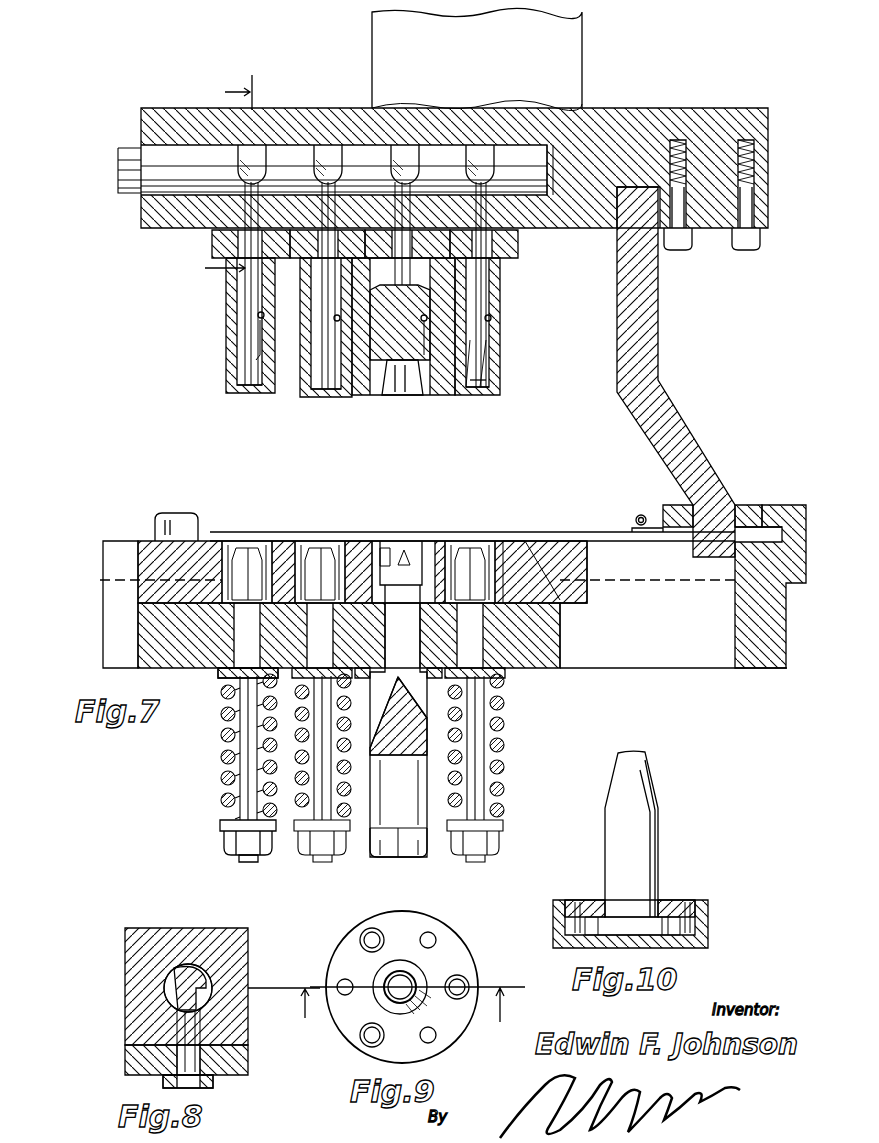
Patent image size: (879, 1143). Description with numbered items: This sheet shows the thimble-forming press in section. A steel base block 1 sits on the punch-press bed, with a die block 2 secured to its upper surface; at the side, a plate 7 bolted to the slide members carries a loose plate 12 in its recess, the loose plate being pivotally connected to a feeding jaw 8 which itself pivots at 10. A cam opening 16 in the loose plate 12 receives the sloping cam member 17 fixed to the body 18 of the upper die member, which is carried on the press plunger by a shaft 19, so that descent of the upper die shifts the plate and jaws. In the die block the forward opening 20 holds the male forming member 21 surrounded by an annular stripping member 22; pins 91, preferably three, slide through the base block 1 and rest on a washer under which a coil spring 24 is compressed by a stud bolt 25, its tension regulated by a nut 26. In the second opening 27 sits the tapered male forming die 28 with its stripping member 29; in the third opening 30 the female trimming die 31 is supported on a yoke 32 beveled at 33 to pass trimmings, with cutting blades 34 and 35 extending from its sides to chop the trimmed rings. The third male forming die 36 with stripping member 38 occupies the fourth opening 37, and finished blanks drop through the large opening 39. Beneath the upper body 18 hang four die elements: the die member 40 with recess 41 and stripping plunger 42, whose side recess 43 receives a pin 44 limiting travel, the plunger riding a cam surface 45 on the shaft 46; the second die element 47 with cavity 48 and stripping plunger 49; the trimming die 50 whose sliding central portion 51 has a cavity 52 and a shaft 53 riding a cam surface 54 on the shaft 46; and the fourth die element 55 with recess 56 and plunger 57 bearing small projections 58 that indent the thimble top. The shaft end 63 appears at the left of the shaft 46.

In FIG. 7, the base block 1 is at (138, 633).
In FIG. 7, the die block 2 is at (138, 558).
In FIG. 7, the plate 7 is at (780, 504).
In FIG. 7, the feeding jaw 8 is at (364, 532).
In FIG. 8, the pivot 10 is at (284, 1003).
In FIG. 9, the pivot 10 is at (418, 1004).
In FIG. 7, the loose plate 12 is at (746, 504).
In FIG. 7, the cam opening 16 is at (663, 510).
In FIG. 7, the sloping cam member 17 is at (617, 328).
In FIG. 7, the body of upper die member 18 is at (580, 228).
In FIG. 8, the body of upper die member 18 is at (125, 966).
In FIG. 7, the shaft 19 is at (574, 43).
In FIG. 7, the forward opening 20 is at (280, 541).
In FIG. 7, the male forming member 21 is at (248, 545).
In FIG. 7, the annular stripping member 22 is at (224, 541).
In FIG. 7, the coil spring 24 is at (221, 737).
In FIG. 7, the stud bolt 25 is at (248, 862).
In FIG. 7, the nut 26 is at (224, 840).
In FIG. 7, the second opening 27 is at (343, 541).
In FIG. 7, the tapered male forming die 28 is at (325, 545).
In FIG. 9, the tapered male forming die 28 is at (408, 980).
In FIG. 10, the tapered male forming die 28 is at (640, 822).
In FIG. 7, the annular stripping member 29 is at (300, 541).
In FIG. 7, the third opening 30 is at (448, 541).
In FIG. 7, the female trimming die 31 is at (401, 545).
In FIG. 7, the yoke 32 is at (427, 835).
In FIG. 7, the bevel 33 is at (427, 715).
In FIG. 7, the cutting blade 34 is at (384, 545).
In FIG. 7, the cutting blade 35 is at (408, 548).
In FIG. 7, the third male forming die 36 is at (491, 541).
In FIG. 7, the fourth opening 37 is at (512, 545).
In FIG. 7, the stripping member 38 is at (462, 545).
In FIG. 7, the large opening 39 is at (588, 541).
In FIG. 7, the die member 40 is at (226, 312).
In FIG. 8, the die member 40 is at (230, 1078).
In FIG. 7, the recess 41 is at (250, 393).
In FIG. 7, the stripping plunger 42 is at (245, 347).
In FIG. 8, the stripping plunger 42 is at (190, 1037).
In FIG. 7, the recess 43 is at (262, 345).
In FIG. 7, the pin 44 is at (264, 316).
In FIG. 7, the cam surface 45 is at (262, 158).
In FIG. 8, the cam surface 45 is at (212, 990).
In FIG. 7, the shaft 46 is at (163, 152).
In FIG. 8, the shaft 46 is at (170, 958).
In FIG. 7, the second die element 47 is at (303, 397).
In FIG. 7, the cavity 48 is at (338, 397).
In FIG. 7, the stripping plunger 49 is at (341, 316).
In FIG. 7, the trimming die 50 is at (414, 352).
In FIG. 7, the central portion 51 is at (436, 334).
In FIG. 7, the cavity 52 is at (406, 396).
In FIG. 7, the shaft 53 is at (410, 265).
In FIG. 7, the cam surface 54 is at (405, 158).
In FIG. 7, the fourth die element 55 is at (490, 372).
In FIG. 7, the recess 56 is at (492, 396).
In FIG. 7, the plunger 57 is at (492, 282).
In FIG. 7, the small projections 58 is at (478, 396).
In FIG. 7, the shaft 63 is at (118, 148).
In FIG. 7, the pins 91 is at (218, 674).